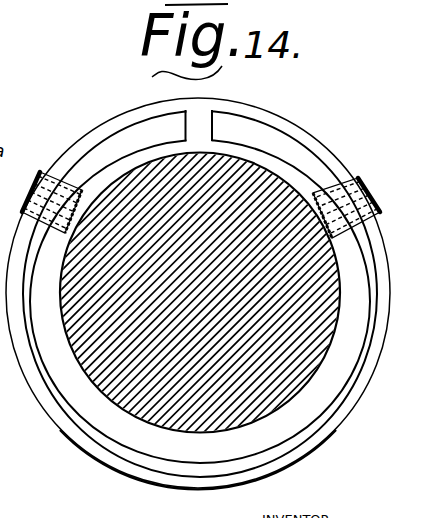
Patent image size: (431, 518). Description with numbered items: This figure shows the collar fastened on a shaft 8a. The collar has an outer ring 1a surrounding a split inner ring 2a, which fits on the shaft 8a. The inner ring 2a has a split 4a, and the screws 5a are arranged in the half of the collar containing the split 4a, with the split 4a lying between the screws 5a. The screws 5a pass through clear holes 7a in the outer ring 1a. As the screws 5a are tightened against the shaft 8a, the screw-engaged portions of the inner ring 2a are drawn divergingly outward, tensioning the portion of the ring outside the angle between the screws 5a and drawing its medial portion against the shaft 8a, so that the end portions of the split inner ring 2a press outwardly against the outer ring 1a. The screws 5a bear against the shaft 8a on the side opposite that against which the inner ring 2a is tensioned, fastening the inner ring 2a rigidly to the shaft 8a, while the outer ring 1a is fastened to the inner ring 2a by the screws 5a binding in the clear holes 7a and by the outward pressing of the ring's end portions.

The outer ring 1a is at (137, 100).
The inner ring 2a is at (265, 140).
The split 4a is at (200, 116).
The screws 5a is at (394, 159).
The clear holes 7a is at (58, 157).
The shaft 8a is at (123, 363).